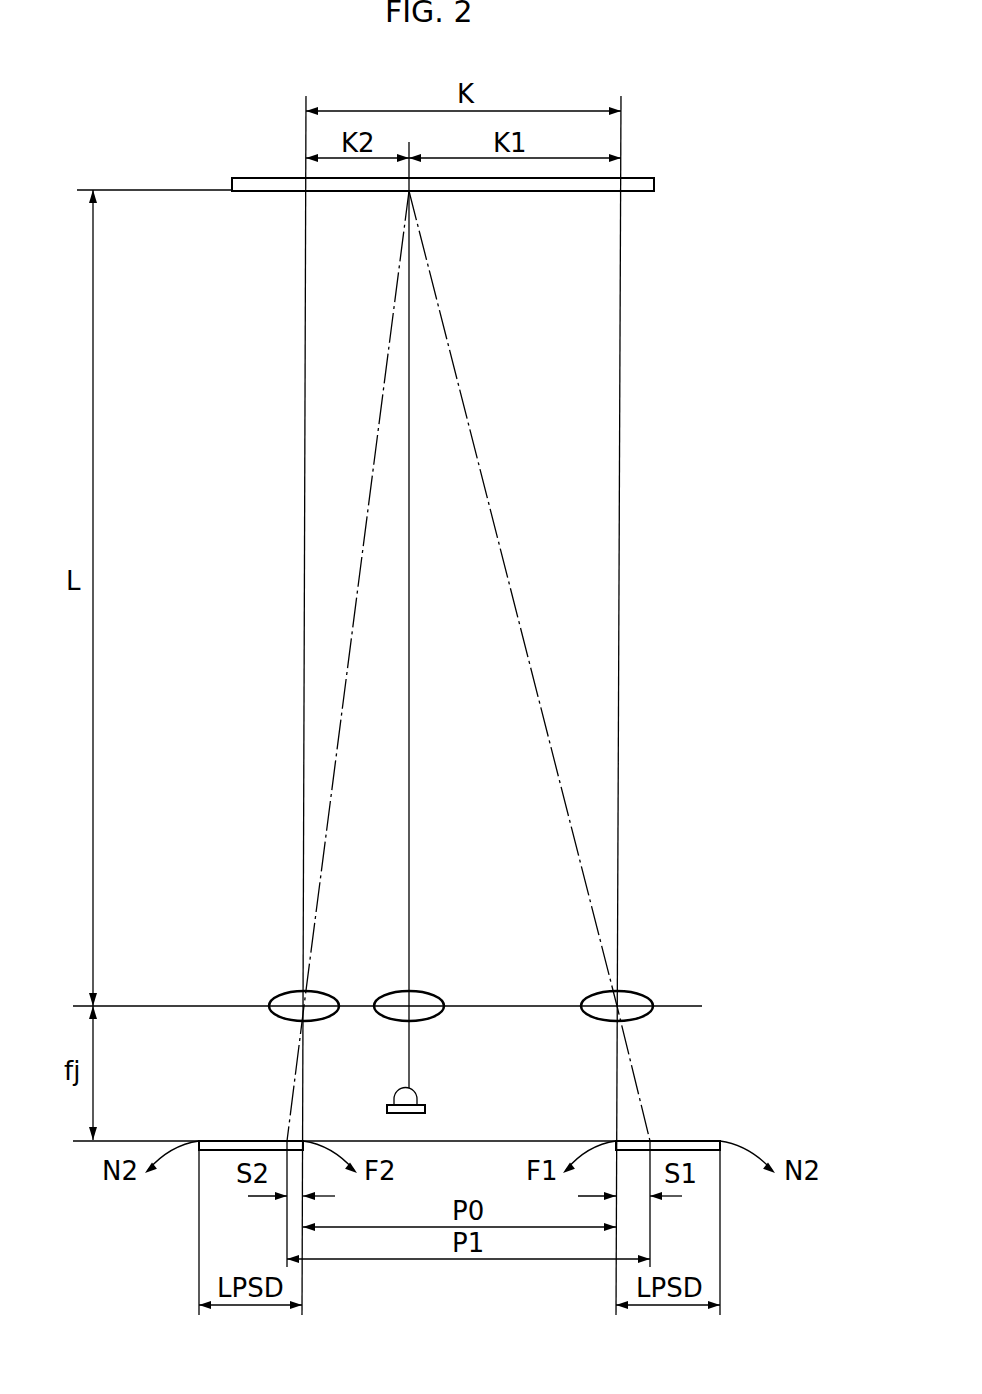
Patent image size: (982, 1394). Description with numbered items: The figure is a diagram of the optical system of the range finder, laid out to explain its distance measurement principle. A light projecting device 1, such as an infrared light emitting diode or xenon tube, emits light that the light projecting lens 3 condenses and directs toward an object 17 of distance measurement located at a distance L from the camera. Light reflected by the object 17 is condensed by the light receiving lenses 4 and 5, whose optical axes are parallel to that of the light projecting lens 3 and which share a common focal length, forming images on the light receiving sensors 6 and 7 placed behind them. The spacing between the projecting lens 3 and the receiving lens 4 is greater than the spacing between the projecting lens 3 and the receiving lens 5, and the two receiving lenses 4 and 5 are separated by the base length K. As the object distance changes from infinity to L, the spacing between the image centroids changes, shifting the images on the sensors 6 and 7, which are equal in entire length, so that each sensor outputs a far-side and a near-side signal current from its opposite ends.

The object 17 is at (642, 178).
The light receiving lens 5 is at (290, 991).
The light projecting lens 3 is at (425, 991).
The light receiving lens 4 is at (633, 992).
The light projecting device 1 is at (425, 1109).
The light receiving sensor 7 is at (217, 1139).
The light receiving sensor 6 is at (703, 1139).